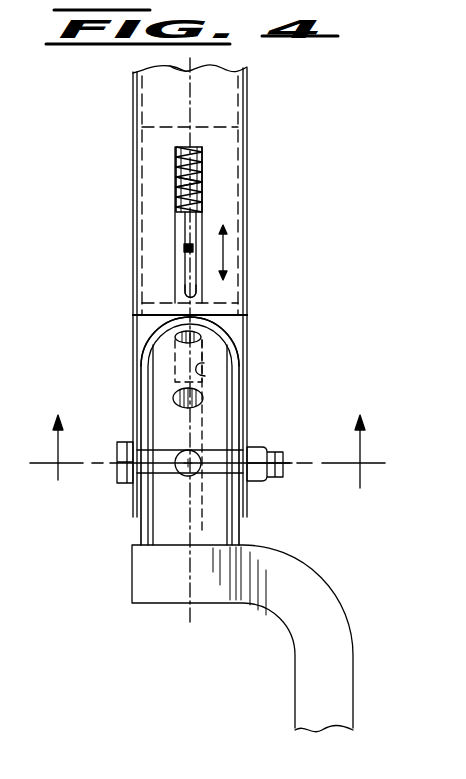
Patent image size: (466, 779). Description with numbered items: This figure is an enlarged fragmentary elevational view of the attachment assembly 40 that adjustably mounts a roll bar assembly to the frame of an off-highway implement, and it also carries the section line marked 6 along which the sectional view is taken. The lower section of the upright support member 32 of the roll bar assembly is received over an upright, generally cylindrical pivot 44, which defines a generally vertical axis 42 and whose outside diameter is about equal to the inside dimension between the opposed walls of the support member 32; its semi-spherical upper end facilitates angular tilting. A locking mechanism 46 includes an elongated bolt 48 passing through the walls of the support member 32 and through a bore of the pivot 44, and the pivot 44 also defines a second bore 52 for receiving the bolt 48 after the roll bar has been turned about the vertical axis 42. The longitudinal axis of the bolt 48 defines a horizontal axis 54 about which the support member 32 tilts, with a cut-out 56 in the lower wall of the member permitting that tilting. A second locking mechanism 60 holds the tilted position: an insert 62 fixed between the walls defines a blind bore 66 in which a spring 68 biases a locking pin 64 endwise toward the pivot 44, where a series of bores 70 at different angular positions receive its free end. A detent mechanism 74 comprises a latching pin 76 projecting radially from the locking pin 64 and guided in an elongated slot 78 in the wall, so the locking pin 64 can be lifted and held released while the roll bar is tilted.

The section line 6- 6 is at (207, 455).
The upright support member 32 is at (222, 108).
The attachment assembly 40 is at (283, 535).
The vertical axis 42 is at (192, 62).
The pivot 44 is at (213, 421).
The locking mechanism 46 is at (116, 437).
The bolt 48 is at (117, 477).
The second bore 52 is at (178, 471).
The horizontal axis 54 is at (263, 446).
The cut-out 56 is at (230, 319).
The locking mechanism 60 is at (206, 218).
The insert 62 is at (244, 283).
The locking pin 64 is at (143, 312).
The blind bore 66 is at (176, 168).
The spring 68 is at (203, 165).
The bores 70 is at (148, 333).
The detent mechanism 74 is at (178, 205).
The latching pin 76 is at (184, 249).
The elongated slot 78 is at (187, 279).